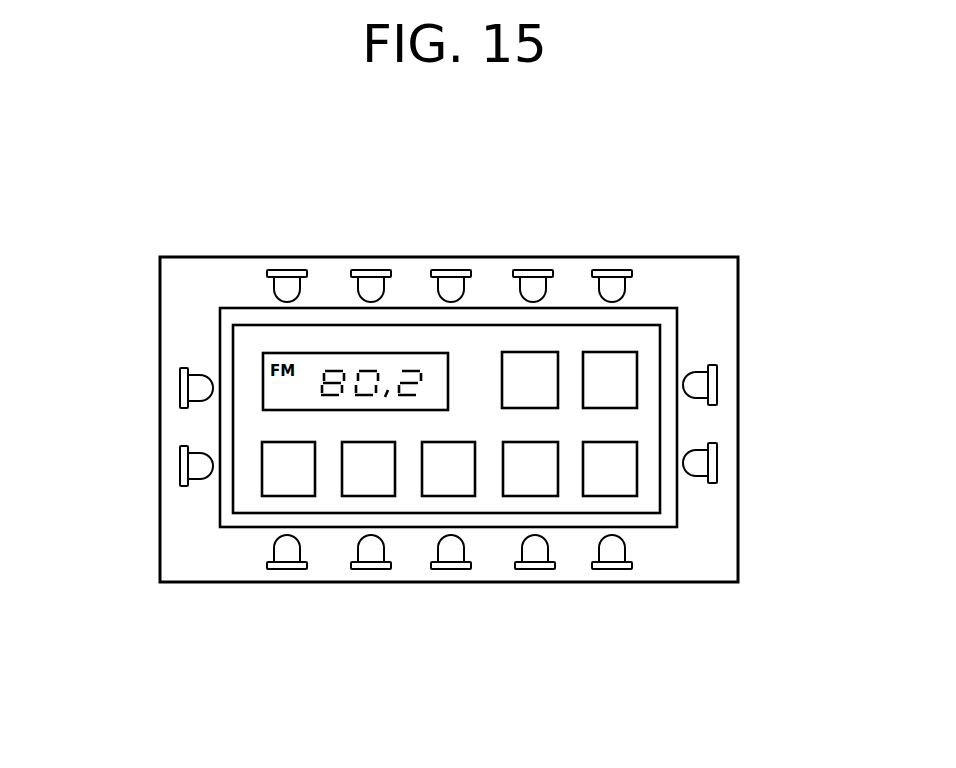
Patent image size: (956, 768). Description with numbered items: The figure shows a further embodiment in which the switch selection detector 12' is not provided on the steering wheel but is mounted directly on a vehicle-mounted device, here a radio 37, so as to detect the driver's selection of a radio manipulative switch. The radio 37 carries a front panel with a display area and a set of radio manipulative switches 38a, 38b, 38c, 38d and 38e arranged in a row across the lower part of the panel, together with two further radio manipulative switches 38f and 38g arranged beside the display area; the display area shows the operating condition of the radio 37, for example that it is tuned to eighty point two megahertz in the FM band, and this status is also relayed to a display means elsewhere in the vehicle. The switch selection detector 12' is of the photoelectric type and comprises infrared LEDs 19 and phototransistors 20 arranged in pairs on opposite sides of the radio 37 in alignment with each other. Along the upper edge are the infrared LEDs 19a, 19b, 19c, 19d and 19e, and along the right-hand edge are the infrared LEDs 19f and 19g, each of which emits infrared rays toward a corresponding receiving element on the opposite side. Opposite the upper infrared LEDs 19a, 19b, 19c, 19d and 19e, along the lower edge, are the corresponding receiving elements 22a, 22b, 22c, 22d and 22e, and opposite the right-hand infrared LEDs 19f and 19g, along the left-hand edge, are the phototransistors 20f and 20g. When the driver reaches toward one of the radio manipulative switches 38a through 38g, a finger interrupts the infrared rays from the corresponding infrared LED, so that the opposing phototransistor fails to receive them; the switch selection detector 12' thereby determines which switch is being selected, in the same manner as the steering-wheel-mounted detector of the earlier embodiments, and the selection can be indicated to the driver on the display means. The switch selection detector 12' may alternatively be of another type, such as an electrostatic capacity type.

The switch selection detector 12' is at (482, 415).
The radio 37 is at (677, 331).
The infrared LEDs 19 is at (703, 172).
The infrared LED 19a is at (290, 270).
The infrared LED 19b is at (382, 270).
The infrared LED 19c is at (450, 270).
The infrared LED 19d is at (535, 270).
The infrared LED 19e is at (612, 270).
The infrared LED 19f is at (717, 385).
The infrared LED 19g is at (717, 468).
The phototransistors 20 is at (705, 663).
The phototransistor 20f is at (180, 396).
The phototransistor 20g is at (180, 470).
The switch-selection indicating pattern 22a is at (287, 582).
The switch-selection indicating pattern 22b is at (375, 582).
The switch-selection indicating pattern 22c is at (452, 582).
The switch-selection indicating pattern 22d is at (535, 582).
The switch-selection indicating pattern 22e is at (612, 582).
The radio manipulative switch 38a is at (279, 442).
The radio manipulative switch 38b is at (360, 442).
The radio manipulative switch 38c is at (440, 442).
The radio manipulative switch 38d is at (522, 442).
The radio manipulative switch 38e is at (601, 442).
The radio manipulative switch 38f is at (508, 352).
The radio manipulative switch 38g is at (590, 352).